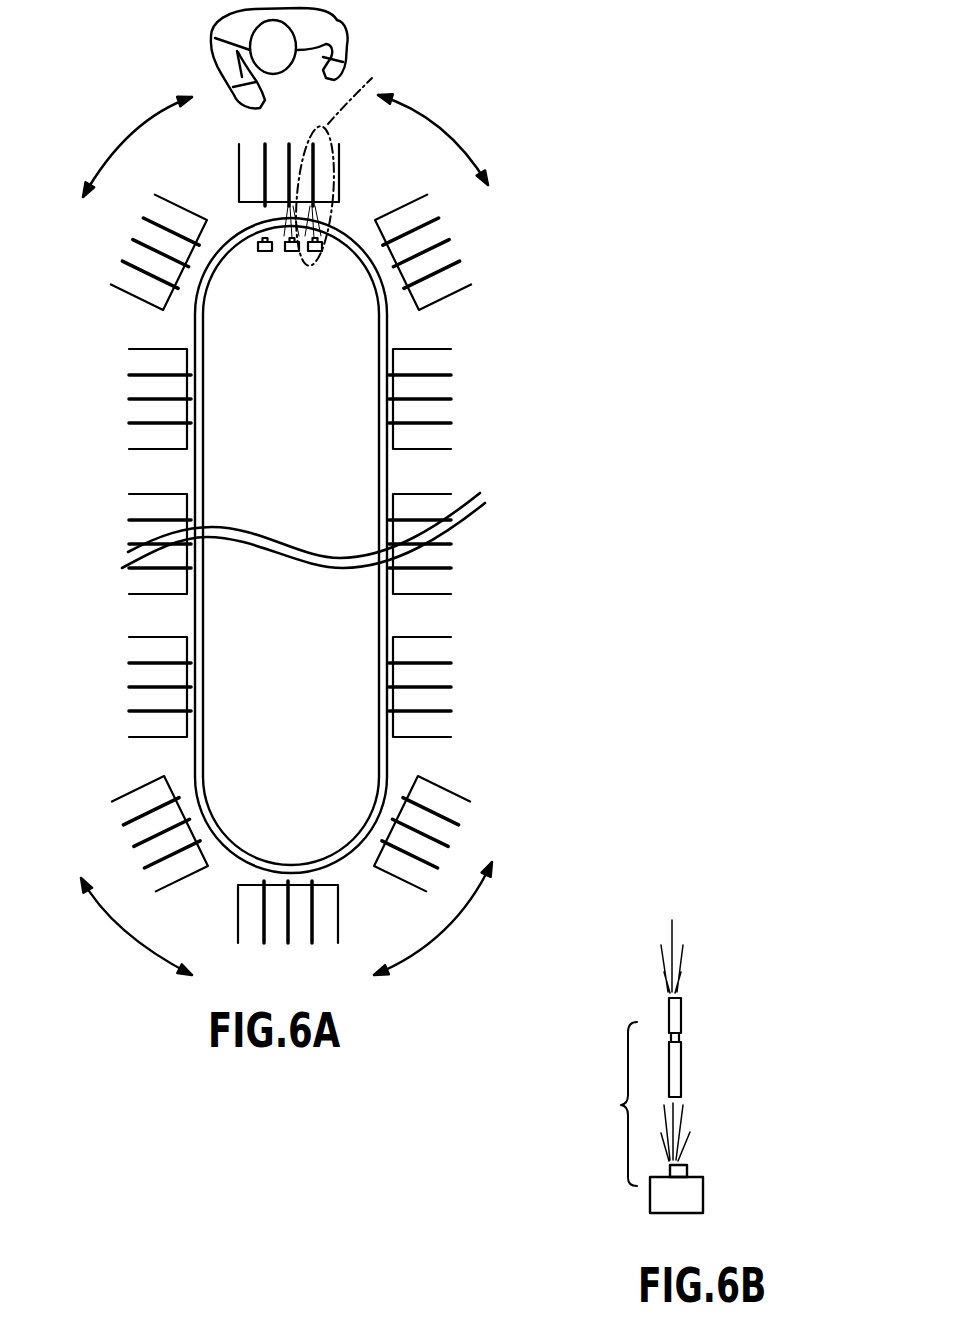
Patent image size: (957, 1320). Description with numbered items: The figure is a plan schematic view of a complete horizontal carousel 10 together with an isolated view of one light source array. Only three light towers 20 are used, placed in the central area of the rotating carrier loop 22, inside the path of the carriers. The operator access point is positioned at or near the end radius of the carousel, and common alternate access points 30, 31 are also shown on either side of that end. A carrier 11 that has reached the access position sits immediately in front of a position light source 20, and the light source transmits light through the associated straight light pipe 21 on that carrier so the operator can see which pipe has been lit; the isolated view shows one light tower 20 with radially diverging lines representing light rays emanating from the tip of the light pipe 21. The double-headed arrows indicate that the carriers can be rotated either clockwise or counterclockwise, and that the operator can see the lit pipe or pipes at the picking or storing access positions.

In FIG. 6A, the processing apparatus 10 is at (331, 494).
In FIG. 6A, the carrier 11 is at (181, 160).
In FIG. 6A, the light source 20 is at (292, 268).
In FIG. 6B, the light source 20 is at (716, 1195).
In FIG. 6A, the light pipe 21 is at (313, 180).
In FIG. 6B, the light pipe 21 is at (682, 1060).
In FIG. 6A, the rotating carrier loop 22 is at (205, 408).
In FIG. 6A, the alternate access point 30 is at (138, 200).
In FIG. 6A, the alternate access point 31 is at (443, 196).